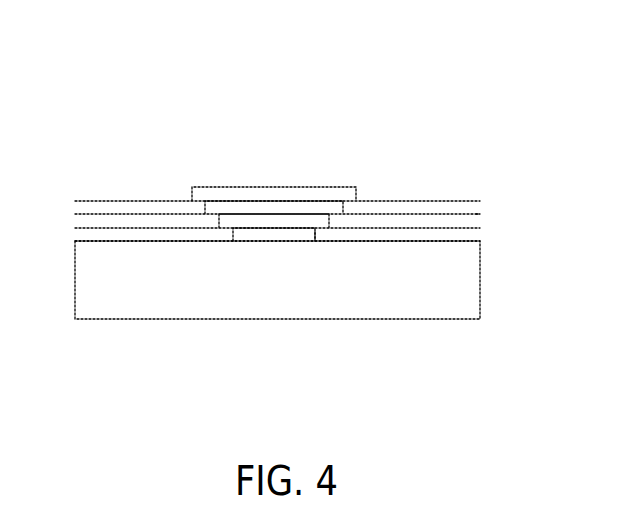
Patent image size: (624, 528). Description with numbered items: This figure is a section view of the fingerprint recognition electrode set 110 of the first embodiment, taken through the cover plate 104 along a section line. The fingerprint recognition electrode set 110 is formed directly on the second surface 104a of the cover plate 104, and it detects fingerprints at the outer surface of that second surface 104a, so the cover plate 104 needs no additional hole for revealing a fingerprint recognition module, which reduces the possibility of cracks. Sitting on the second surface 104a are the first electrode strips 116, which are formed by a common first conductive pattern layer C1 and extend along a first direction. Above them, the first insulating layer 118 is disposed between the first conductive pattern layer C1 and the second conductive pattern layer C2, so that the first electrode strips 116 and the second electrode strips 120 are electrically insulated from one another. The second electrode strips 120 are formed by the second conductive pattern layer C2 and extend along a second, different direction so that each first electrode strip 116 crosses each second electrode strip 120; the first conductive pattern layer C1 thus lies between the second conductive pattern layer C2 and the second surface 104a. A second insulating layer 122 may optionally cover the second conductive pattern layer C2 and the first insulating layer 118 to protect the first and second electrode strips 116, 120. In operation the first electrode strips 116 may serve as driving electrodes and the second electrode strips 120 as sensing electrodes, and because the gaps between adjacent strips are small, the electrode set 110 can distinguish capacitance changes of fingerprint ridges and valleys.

The fingerprint recognition electrode set 110 is at (293, 205).
The cover plate 104 is at (164, 300).
The second surface 104a is at (97, 241).
The first electrode strips 116 is at (272, 236).
The first insulating layer 118 is at (482, 232).
The second electrode strips 120 is at (482, 217).
The second insulating layer 122 is at (440, 201).
The first conductive pattern layer C1 is at (316, 237).
The second conductive pattern layer C2 is at (481, 224).